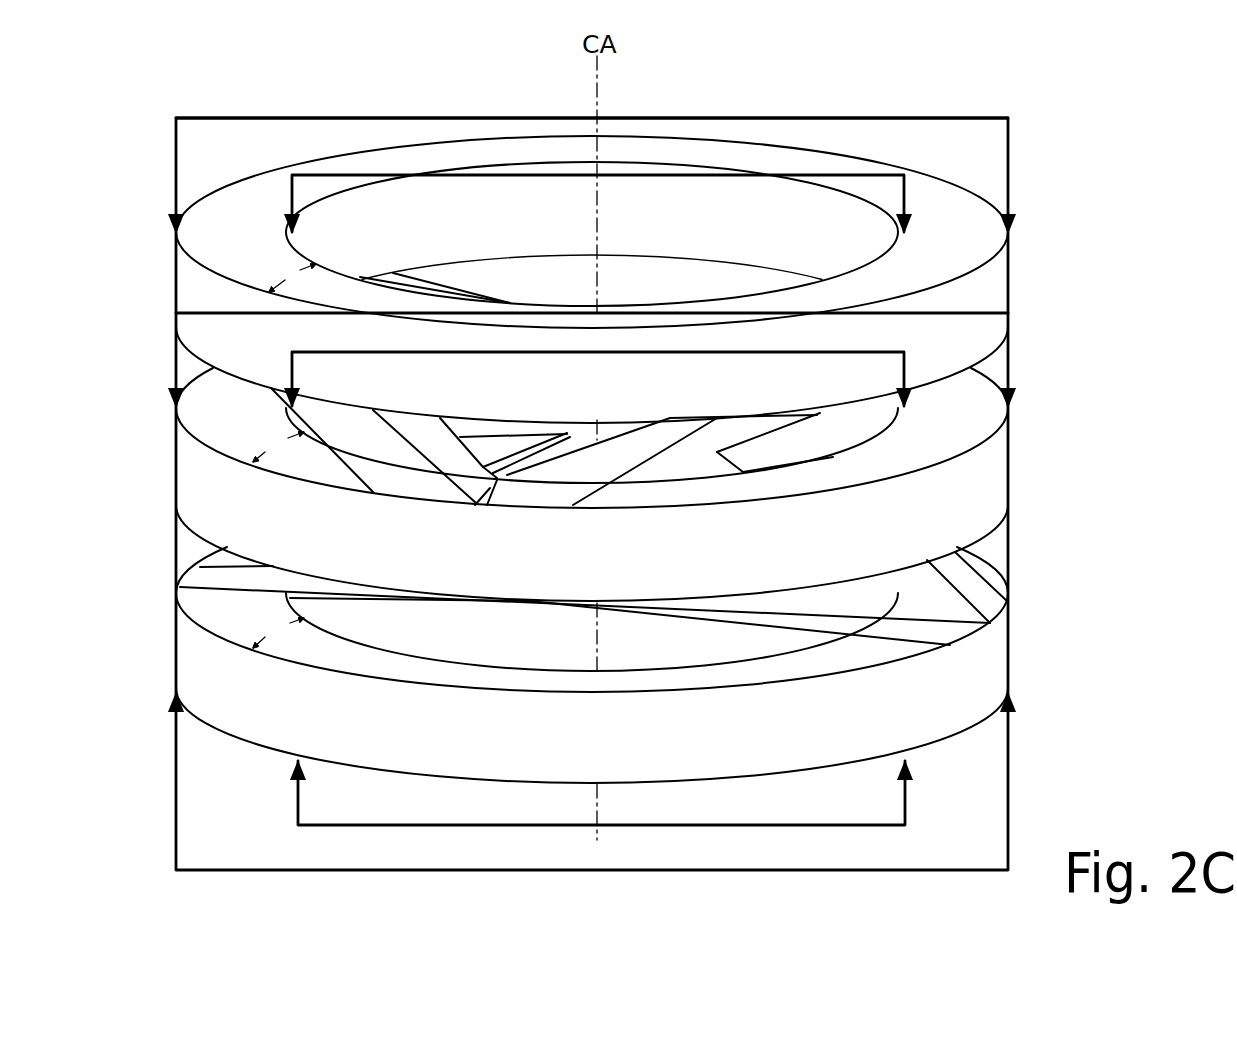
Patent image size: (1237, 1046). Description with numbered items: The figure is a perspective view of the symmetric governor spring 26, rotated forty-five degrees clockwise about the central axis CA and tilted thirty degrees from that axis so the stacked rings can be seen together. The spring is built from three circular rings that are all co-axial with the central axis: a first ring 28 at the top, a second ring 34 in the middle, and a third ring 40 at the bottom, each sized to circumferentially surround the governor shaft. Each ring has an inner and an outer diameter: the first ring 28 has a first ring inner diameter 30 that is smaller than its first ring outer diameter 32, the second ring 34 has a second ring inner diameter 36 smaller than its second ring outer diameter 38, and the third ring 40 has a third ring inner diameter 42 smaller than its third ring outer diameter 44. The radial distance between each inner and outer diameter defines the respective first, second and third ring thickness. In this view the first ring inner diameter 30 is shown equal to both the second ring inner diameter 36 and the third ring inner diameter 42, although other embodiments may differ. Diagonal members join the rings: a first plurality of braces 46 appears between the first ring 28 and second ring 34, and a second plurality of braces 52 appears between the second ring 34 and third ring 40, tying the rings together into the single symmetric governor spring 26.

The symmetric governor spring 26 is at (1074, 78).
The first ring 28 is at (990, 277).
The first ring inner diameter 30 is at (810, 178).
The first ring outer diameter 32 is at (767, 117).
The second ring 34 is at (980, 489).
The second ring inner diameter 36 is at (727, 352).
The second ring outer diameter 38 is at (688, 312).
The third ring 40 is at (982, 658).
The third ring inner diameter 42 is at (793, 823).
The third ring outer diameter 44 is at (650, 873).
The first plurality of braces 46 is at (793, 407).
The second plurality of braces 52 is at (808, 612).